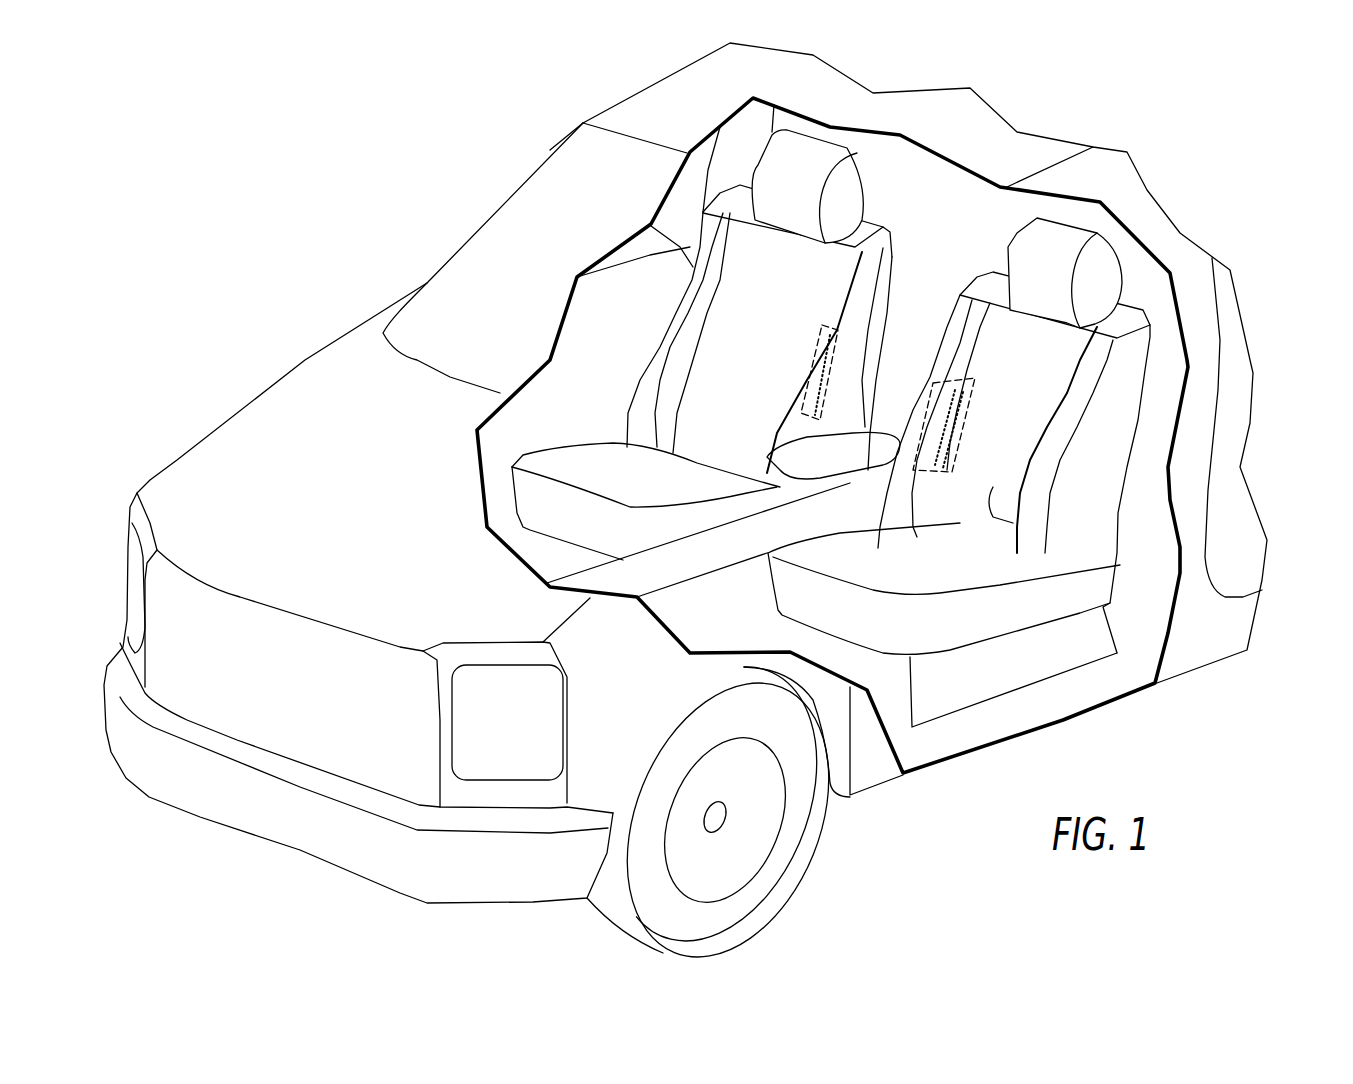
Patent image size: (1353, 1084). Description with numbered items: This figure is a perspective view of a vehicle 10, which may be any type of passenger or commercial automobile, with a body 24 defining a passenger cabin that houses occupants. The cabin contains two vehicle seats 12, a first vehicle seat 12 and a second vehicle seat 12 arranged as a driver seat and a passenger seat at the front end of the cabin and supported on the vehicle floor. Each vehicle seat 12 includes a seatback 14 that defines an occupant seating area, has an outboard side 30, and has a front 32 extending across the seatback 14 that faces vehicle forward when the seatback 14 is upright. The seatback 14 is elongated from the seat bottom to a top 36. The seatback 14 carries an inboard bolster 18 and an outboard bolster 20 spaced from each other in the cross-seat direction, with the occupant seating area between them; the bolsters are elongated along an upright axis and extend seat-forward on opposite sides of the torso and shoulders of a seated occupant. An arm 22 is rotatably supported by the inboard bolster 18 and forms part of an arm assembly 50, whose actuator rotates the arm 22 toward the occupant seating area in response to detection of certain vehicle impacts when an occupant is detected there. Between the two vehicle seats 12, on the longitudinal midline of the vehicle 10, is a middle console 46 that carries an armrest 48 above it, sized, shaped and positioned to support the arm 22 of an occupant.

The vehicle 10 is at (320, 213).
The vehicle seat 12 is at (968, 277).
The seatback 14 is at (713, 367).
The inboard bolster 18 is at (873, 280).
The outboard bolster 20 is at (680, 280).
The arm 22 is at (835, 327).
The body 24 is at (340, 330).
The outboard side 30 is at (673, 327).
The front 32 is at (710, 413).
The top 36 is at (878, 285).
The middle console 46 is at (840, 503).
The armrest 48 is at (762, 457).
The arm assembly 50 is at (785, 417).